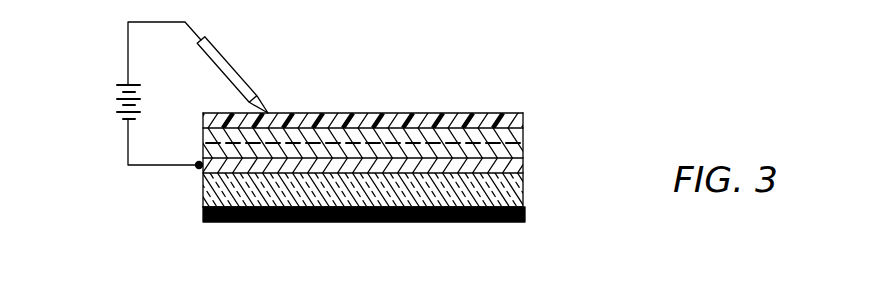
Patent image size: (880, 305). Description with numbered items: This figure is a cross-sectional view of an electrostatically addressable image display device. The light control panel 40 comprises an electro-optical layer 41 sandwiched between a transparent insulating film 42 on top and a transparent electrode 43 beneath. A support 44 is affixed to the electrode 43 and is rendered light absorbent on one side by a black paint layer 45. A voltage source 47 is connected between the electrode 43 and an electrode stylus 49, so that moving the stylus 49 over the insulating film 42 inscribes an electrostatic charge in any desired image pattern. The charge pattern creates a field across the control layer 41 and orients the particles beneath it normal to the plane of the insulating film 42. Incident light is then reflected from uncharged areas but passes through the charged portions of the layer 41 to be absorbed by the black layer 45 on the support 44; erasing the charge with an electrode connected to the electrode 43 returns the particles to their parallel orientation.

The light control panel 40 is at (428, 113).
The electro-optical layer 41 is at (523, 149).
The transparent insulating film 42 is at (523, 117).
The transparent electrode 43 is at (522, 166).
The support 44 is at (522, 189).
The black paint layer 45 is at (525, 213).
The voltage source 47 is at (108, 100).
The electrode stylus 49 is at (240, 75).